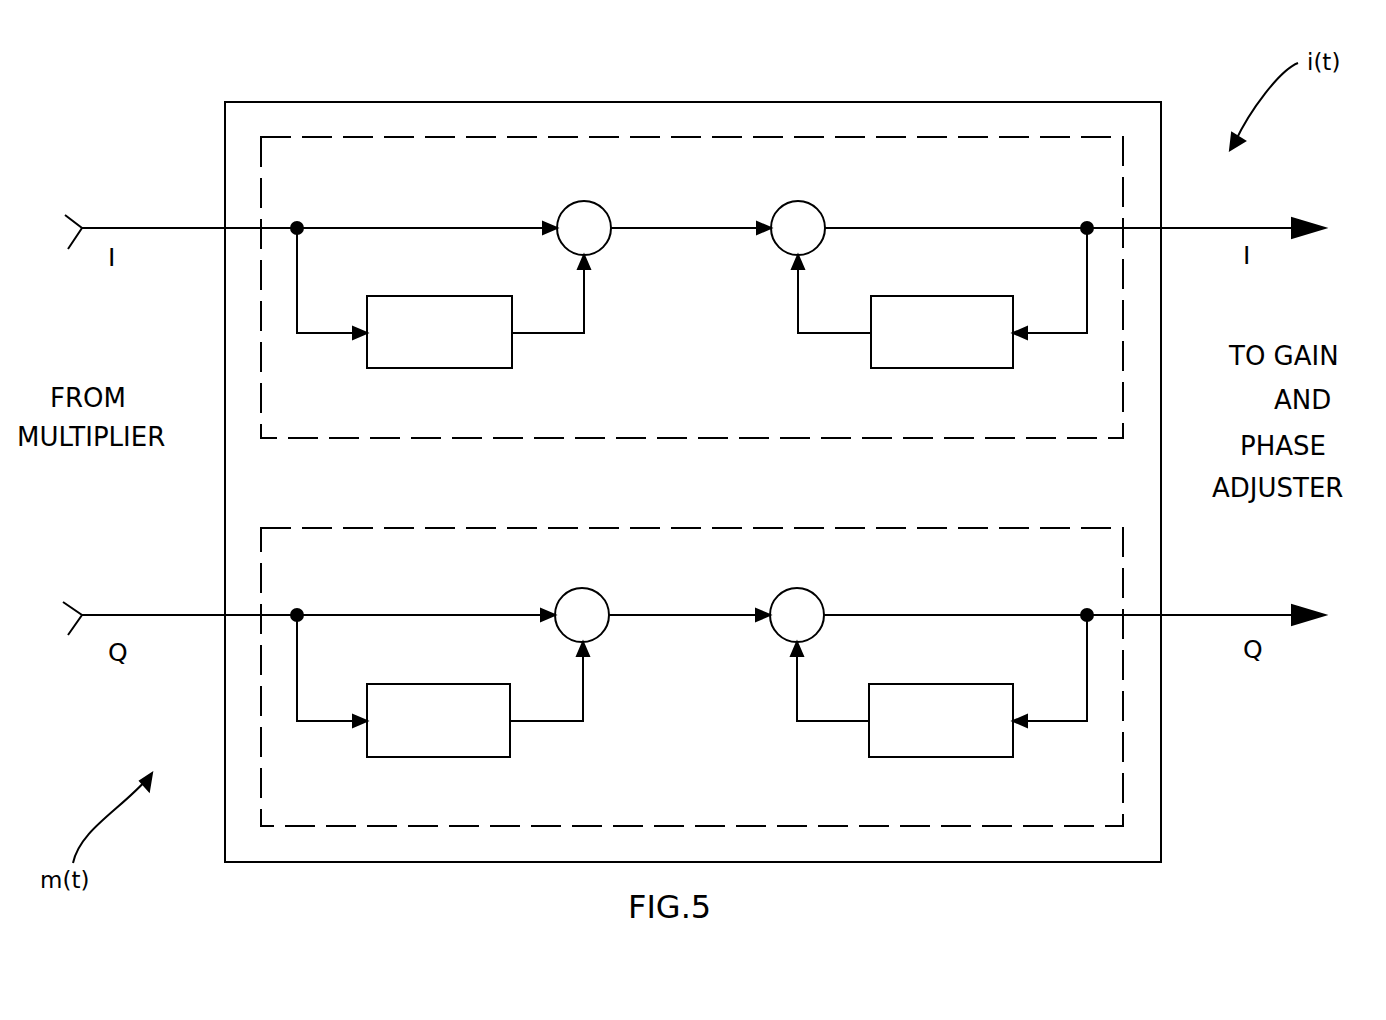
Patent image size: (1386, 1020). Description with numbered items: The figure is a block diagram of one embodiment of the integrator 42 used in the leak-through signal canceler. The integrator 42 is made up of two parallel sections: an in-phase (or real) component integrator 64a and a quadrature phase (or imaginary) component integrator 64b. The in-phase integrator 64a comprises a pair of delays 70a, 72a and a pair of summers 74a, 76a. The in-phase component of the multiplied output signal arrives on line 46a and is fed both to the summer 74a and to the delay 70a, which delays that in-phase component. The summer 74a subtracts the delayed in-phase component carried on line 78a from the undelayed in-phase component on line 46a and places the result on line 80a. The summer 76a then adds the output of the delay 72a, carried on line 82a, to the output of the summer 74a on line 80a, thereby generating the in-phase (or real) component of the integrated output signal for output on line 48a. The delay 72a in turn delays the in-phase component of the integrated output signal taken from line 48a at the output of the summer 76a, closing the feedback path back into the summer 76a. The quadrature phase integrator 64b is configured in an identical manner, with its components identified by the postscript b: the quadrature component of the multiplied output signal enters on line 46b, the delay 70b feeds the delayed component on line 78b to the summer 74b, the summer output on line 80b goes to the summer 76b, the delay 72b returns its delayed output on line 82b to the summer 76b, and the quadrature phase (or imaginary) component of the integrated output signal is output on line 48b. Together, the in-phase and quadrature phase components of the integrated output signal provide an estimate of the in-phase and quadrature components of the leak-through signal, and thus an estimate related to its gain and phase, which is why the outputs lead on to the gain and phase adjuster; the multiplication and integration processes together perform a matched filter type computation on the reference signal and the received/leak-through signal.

The integrator 42 is at (650, 102).
The line 46a is at (152, 227).
The line 46b is at (137, 614).
The line 48a is at (1212, 223).
The line 48b is at (1203, 613).
The in-phase component integrator 64a is at (790, 438).
The quadrature phase component integrator 64b is at (490, 527).
The delay 70a is at (417, 296).
The delay 70b is at (393, 684).
The delay 72a is at (922, 296).
The delay 72b is at (910, 683).
The summer 74a is at (603, 247).
The summer 74b is at (603, 635).
The summer 76a is at (818, 202).
The summer 76b is at (827, 597).
The line 78a is at (545, 335).
The line 78b is at (547, 721).
The line 80a is at (645, 227).
The line 80b is at (660, 614).
The line 82a is at (835, 334).
The line 82b is at (837, 721).